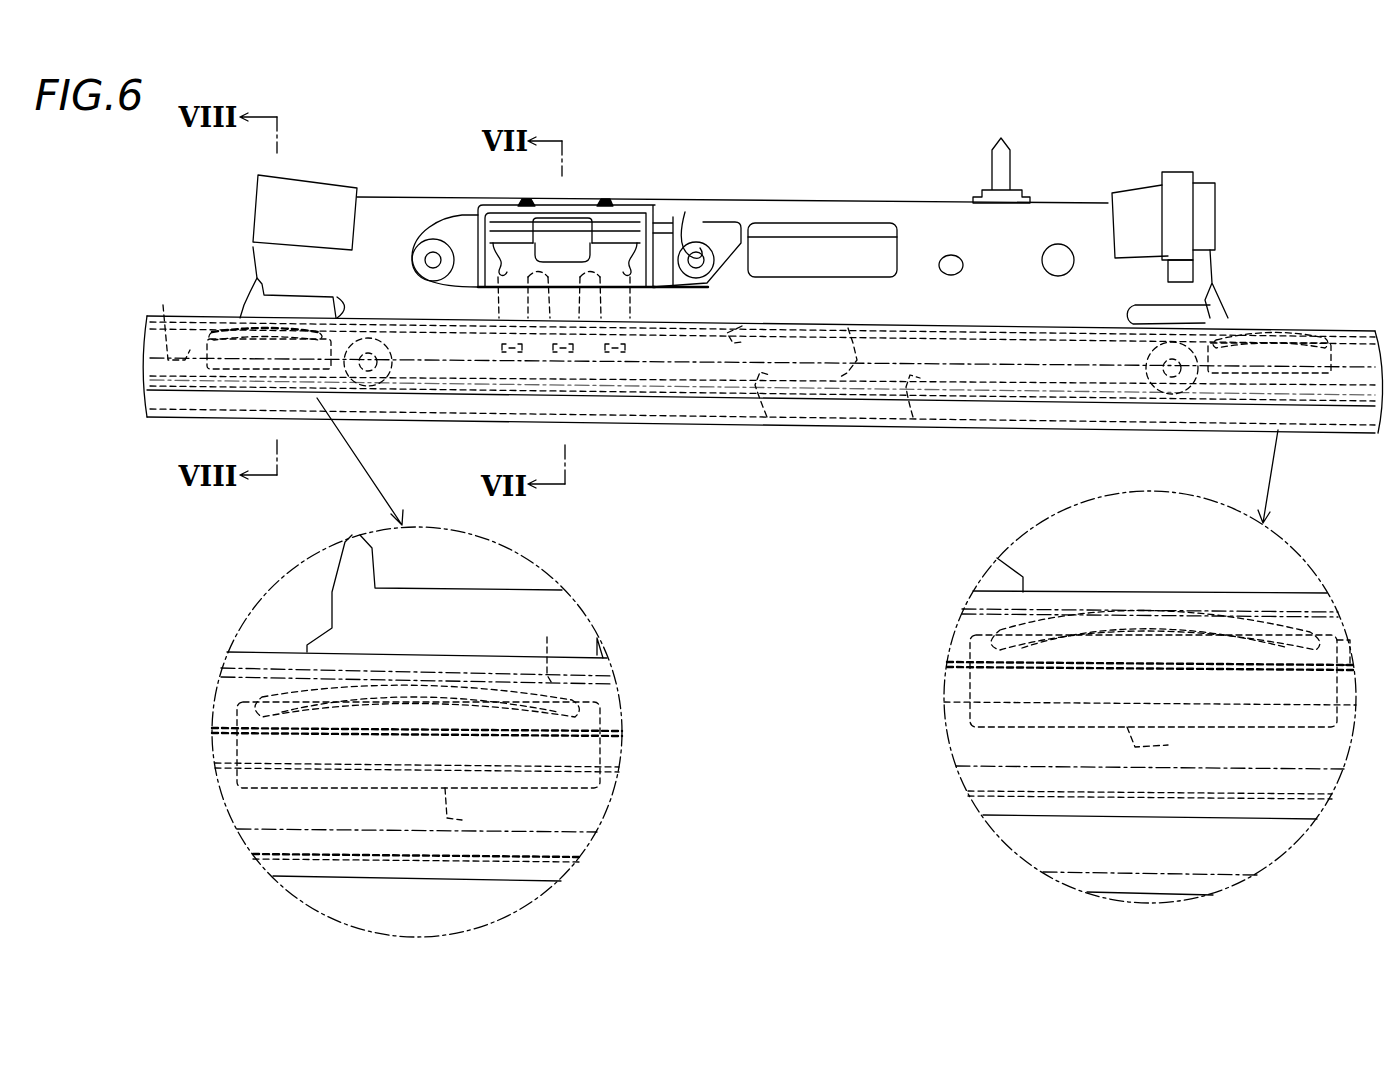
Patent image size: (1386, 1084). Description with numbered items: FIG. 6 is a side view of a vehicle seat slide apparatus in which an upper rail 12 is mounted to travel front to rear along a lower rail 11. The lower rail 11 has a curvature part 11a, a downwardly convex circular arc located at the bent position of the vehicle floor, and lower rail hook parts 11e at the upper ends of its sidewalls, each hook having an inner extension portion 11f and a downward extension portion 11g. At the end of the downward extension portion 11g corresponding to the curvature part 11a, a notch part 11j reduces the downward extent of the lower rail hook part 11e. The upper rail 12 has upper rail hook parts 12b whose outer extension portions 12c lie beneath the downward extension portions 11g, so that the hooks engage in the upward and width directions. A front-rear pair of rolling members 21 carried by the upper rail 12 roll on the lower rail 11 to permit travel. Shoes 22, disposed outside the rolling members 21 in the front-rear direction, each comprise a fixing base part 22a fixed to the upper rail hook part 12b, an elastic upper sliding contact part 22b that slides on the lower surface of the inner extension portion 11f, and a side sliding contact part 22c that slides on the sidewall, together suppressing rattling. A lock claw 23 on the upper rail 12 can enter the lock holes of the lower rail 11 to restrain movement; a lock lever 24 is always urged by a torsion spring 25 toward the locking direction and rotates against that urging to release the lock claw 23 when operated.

The lower rail 11 is at (164, 418).
The curvature part 11a is at (990, 433).
The lower rail hook part 11e is at (993, 327).
The inner extension portion 11f is at (742, 326).
The downward extension portion 11g is at (165, 320).
The notch part 11j is at (848, 328).
The upper rail 12 is at (912, 203).
The upper rail hook part 12b is at (767, 417).
The outer extension portion 12c is at (913, 417).
The rolling member 21 is at (397, 397).
The shoe 22 is at (340, 318).
The fixing base part 22a is at (602, 715).
The upper sliding contact part 22b is at (352, 715).
The side sliding contact part 22c is at (833, 779).
The lock claw 23 is at (512, 360).
The lock lever 24 is at (577, 222).
The torsion spring 25 is at (663, 205).